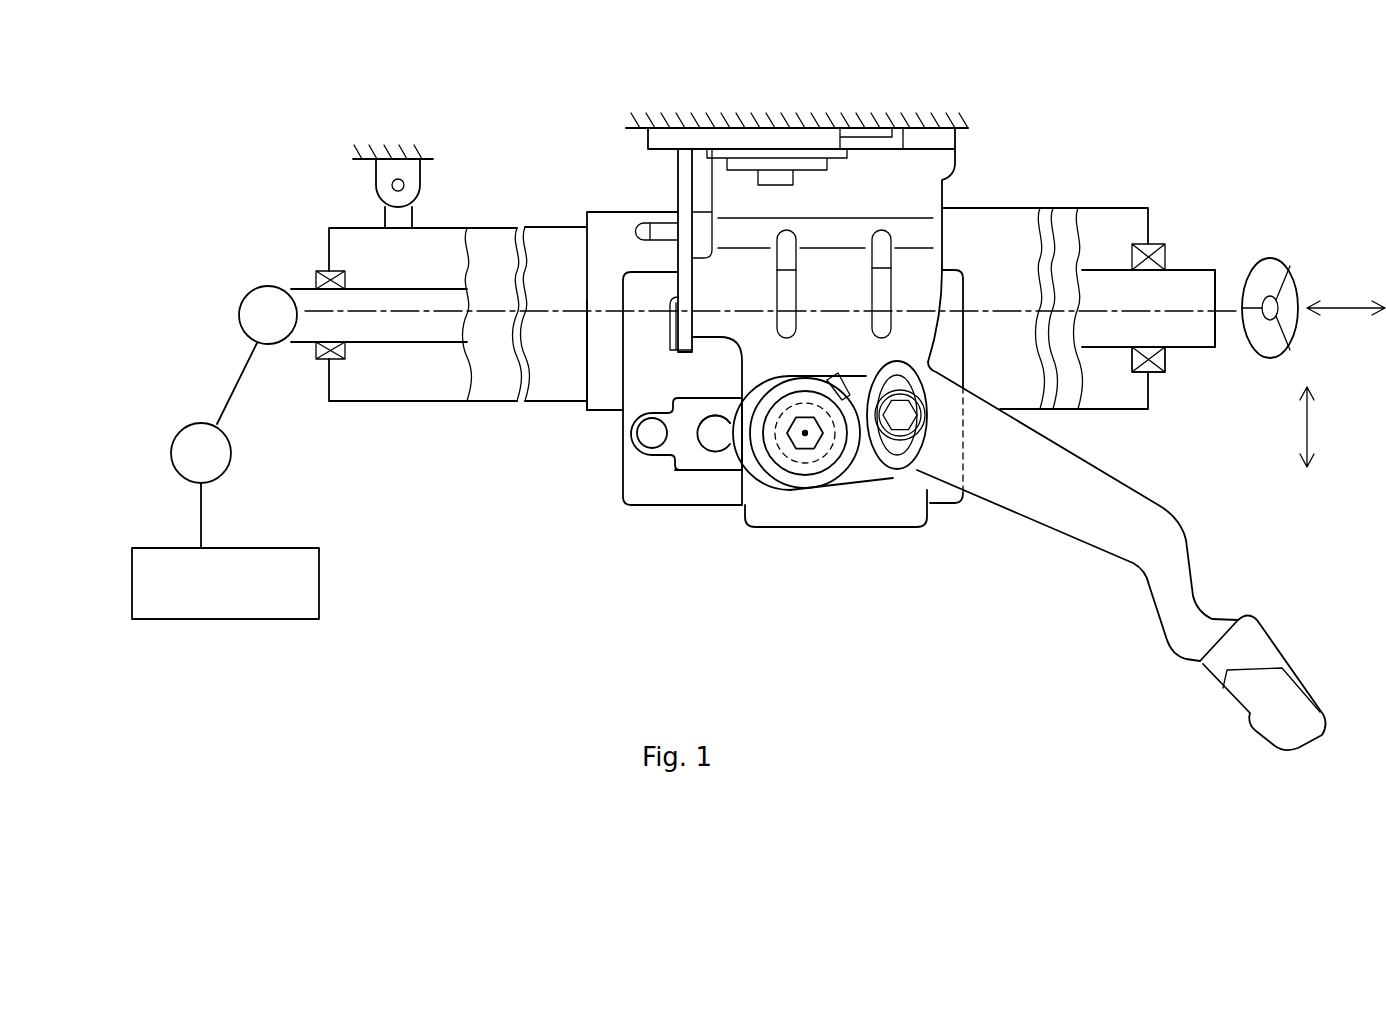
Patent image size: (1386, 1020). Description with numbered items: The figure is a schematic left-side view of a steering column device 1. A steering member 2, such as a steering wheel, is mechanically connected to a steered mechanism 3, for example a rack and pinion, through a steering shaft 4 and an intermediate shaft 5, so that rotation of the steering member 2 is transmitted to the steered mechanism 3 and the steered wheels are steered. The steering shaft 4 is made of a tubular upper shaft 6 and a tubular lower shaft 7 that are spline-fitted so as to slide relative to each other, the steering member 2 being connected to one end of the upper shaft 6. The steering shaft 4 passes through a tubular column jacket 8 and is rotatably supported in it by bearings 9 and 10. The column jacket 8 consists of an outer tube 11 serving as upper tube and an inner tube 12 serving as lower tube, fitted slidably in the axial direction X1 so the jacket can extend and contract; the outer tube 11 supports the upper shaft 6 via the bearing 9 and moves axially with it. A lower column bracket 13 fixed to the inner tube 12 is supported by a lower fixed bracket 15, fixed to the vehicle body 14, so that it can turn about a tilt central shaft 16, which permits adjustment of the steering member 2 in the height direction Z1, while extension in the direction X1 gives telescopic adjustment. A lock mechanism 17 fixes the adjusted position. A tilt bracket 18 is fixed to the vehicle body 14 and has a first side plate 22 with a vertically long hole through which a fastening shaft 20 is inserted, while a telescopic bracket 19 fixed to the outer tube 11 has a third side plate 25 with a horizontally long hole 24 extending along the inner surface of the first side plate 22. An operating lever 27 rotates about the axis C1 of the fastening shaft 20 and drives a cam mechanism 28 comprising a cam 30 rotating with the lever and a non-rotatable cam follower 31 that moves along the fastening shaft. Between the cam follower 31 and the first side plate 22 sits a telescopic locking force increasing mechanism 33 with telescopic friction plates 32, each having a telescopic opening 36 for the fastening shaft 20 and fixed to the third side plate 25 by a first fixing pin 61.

The steering column device 1 is at (1082, 167).
The steering member 2 is at (1268, 258).
The steered mechanism 3 is at (319, 573).
The steering shaft 4 is at (1199, 262).
The intermediate shaft 5 is at (237, 380).
The upper shaft 6 is at (1198, 333).
The lower shaft 7 is at (398, 333).
The column jacket 8 is at (1134, 200).
The bearing 9 is at (1155, 373).
The bearing 10 is at (330, 362).
The outer tube 11 is at (1028, 208).
The inner tube 12 is at (545, 226).
The lower column bracket 13 is at (392, 212).
The vehicle body 14 is at (400, 150).
The lower fixed bracket 15 is at (383, 168).
The tilt central shaft 16 is at (405, 184).
The lock mechanism 17 is at (734, 494).
The tilt bracket 18 is at (956, 193).
The telescopic bracket 19 is at (608, 296).
The fastening shaft 20 is at (818, 433).
The first side plate 22 is at (913, 158).
The horizontally long hole 24 is at (717, 440).
The third side plate 25 is at (628, 345).
The operating lever 27 is at (1173, 547).
The cam mechanism 28 is at (707, 607).
The cam 30 is at (790, 462).
The cam follower 31 is at (760, 473).
The telescopic friction plate 32 is at (680, 453).
The telescopic locking force increasing mechanism 33 is at (655, 476).
The telescopic opening 36 is at (722, 413).
The first fixing pin 61 is at (645, 433).
The axis of fastening shaft C1 is at (805, 433).
The axial direction X1 is at (1347, 312).
The height direction Z1 is at (1310, 427).